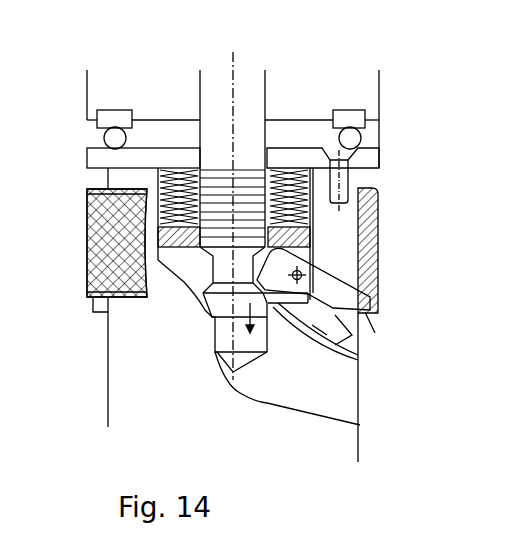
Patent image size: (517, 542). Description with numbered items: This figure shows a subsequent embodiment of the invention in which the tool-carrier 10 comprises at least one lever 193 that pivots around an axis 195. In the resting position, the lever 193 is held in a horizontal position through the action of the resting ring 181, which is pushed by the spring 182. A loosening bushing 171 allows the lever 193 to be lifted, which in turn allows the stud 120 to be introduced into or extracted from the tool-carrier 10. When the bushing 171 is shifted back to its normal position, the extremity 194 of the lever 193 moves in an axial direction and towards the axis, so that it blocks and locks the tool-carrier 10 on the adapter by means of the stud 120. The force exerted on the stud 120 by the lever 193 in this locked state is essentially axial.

The tool-carrier 10 is at (135, 340).
The stud 120 is at (252, 100).
The spring 182 is at (310, 204).
The resting ring 181 is at (312, 235).
The loosening bushing 171 is at (372, 265).
The axis 195 is at (347, 285).
The lever 193 is at (360, 317).
The extremity of the lever 194 is at (360, 380).